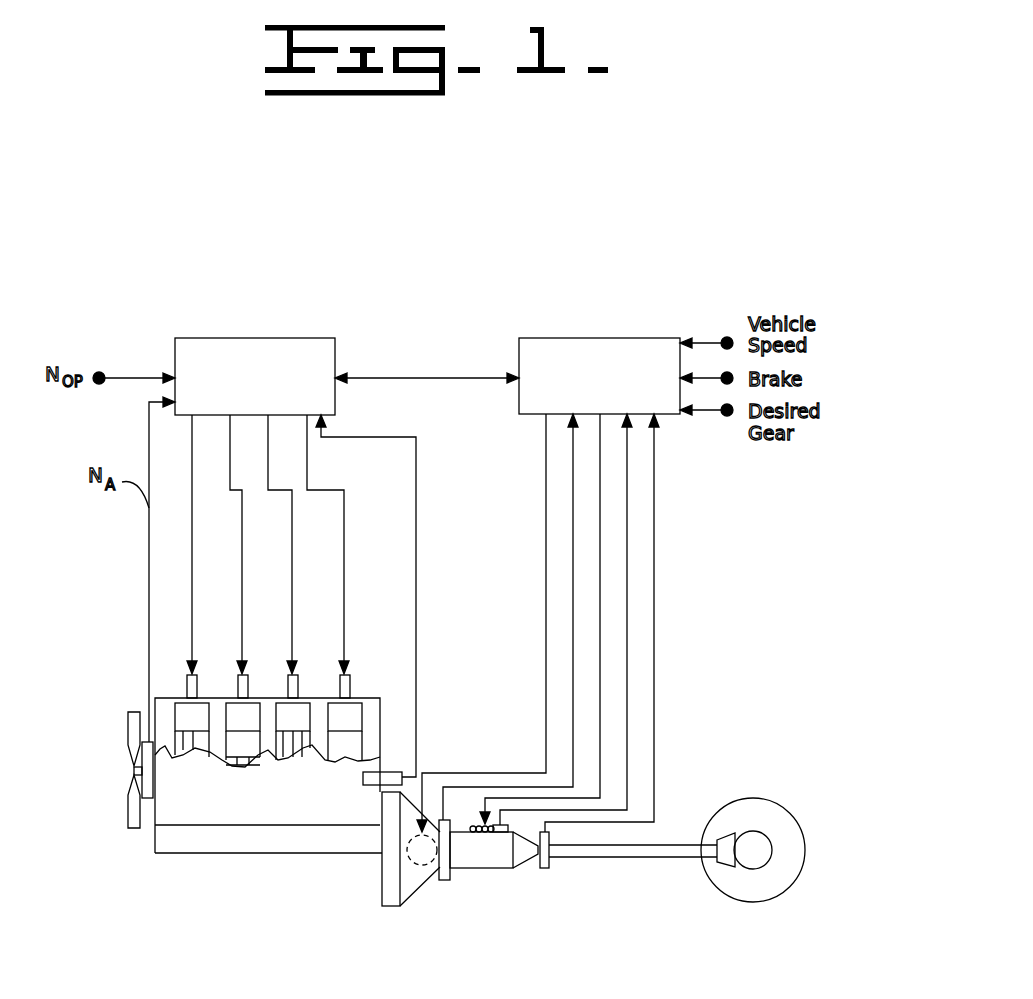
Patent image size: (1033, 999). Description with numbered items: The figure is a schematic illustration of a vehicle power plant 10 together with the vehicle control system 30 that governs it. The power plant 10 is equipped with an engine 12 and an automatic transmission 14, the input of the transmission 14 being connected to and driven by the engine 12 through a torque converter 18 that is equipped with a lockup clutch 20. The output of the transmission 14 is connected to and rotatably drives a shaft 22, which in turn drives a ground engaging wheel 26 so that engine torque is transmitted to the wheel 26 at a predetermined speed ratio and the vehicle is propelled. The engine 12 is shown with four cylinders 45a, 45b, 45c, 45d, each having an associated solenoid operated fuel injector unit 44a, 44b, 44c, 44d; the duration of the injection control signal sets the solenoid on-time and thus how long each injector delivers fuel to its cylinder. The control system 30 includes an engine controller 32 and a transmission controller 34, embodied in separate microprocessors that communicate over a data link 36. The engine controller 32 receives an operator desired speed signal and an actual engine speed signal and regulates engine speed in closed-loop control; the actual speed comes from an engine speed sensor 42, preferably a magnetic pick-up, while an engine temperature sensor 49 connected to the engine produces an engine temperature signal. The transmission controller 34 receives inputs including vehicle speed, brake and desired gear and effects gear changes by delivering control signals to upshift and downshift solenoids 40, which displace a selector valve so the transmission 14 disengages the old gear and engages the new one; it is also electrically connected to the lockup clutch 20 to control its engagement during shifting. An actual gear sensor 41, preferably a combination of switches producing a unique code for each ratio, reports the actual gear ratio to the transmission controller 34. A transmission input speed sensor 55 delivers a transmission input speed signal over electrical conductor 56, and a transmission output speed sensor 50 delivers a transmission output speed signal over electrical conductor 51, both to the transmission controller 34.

The vehicle power plant 10 is at (96, 872).
The engine 12 is at (238, 853).
The automatic transmission 14 is at (478, 870).
The torque converter 18 is at (414, 897).
The lockup clutch 20 is at (400, 877).
The shaft 22 is at (648, 858).
The ground engaging wheel 26 is at (787, 893).
The vehicle control system 30 is at (750, 246).
The engine controller 32 is at (200, 338).
The transmission controller 34 is at (572, 338).
The data link 36 is at (375, 378).
The upshift and downshift solenoids 40 is at (470, 826).
The actual gear sensor 41 is at (505, 832).
The engine speed sensor 42 is at (147, 798).
The solenoid operated fuel injector unit 44a is at (187, 676).
The solenoid operated fuel injector unit 44b is at (238, 676).
The solenoid operated fuel injector unit 44c is at (298, 676).
The solenoid operated fuel injector unit 44d is at (352, 676).
The engine cylinder 45a is at (190, 750).
The engine cylinder 45b is at (232, 766).
The engine cylinder 45c is at (278, 758).
The engine cylinder 45d is at (348, 730).
The engine temperature sensor 49 is at (393, 772).
The transmission output speed sensor 50 is at (552, 866).
The electrical conductor 51 is at (654, 586).
The transmission input speed sensor 55 is at (430, 880).
The electrical conductor 56 is at (573, 540).